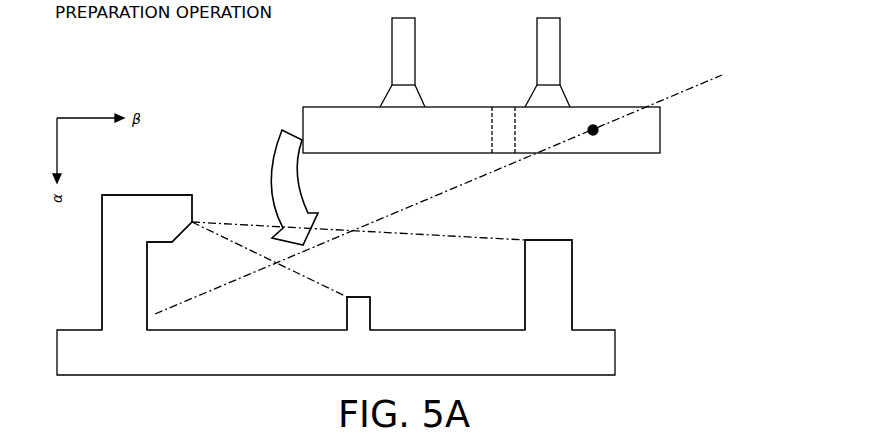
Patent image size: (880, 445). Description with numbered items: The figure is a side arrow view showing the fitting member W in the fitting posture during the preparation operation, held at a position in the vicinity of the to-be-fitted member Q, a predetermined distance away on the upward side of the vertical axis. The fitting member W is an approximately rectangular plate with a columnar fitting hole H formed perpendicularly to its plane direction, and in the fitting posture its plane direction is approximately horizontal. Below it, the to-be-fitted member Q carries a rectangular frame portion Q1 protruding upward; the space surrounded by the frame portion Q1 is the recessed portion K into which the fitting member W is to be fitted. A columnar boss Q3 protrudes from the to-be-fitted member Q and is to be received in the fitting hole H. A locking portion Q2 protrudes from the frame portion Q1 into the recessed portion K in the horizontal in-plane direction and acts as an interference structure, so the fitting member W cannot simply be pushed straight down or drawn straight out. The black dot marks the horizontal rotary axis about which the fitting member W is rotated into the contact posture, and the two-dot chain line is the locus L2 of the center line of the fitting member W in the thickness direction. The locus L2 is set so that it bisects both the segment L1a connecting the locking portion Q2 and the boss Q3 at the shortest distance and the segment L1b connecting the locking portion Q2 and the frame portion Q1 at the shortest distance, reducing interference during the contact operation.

The to-be-fitted member Q is at (592, 330).
The frame portion Q1 is at (572, 240).
The locking portion Q2 is at (153, 195).
The boss Q3 is at (373, 318).
The fitting member W is at (348, 107).
The fitting hole H is at (508, 125).
The locus L2 is at (673, 96).
The segment L1a is at (290, 270).
The segment L1b is at (443, 235).
The recessed portion K is at (475, 260).